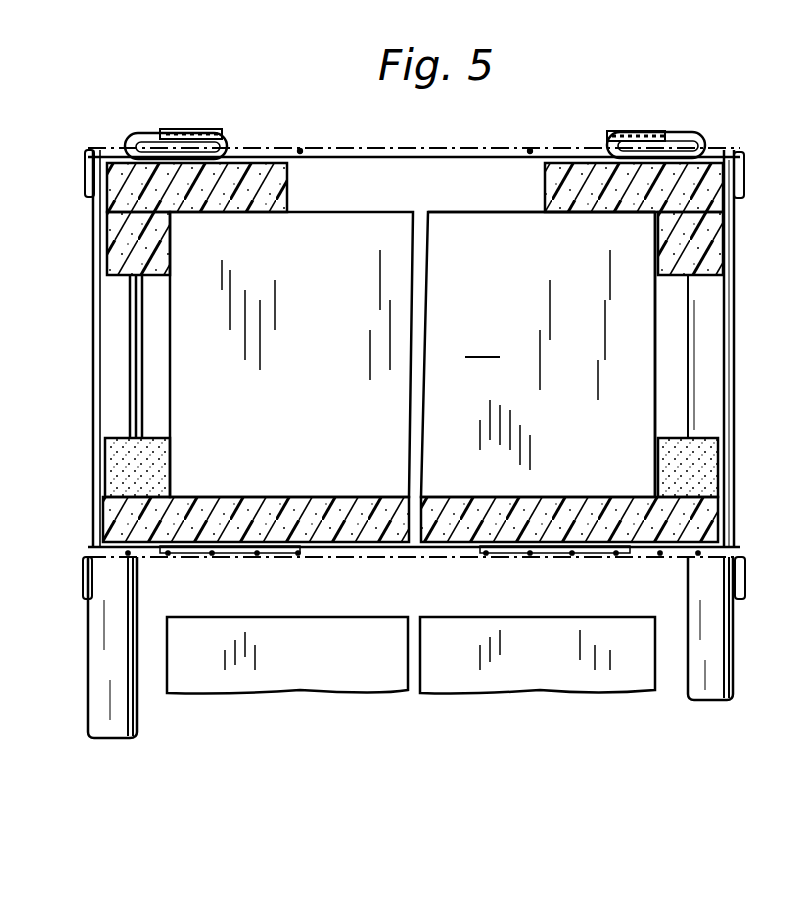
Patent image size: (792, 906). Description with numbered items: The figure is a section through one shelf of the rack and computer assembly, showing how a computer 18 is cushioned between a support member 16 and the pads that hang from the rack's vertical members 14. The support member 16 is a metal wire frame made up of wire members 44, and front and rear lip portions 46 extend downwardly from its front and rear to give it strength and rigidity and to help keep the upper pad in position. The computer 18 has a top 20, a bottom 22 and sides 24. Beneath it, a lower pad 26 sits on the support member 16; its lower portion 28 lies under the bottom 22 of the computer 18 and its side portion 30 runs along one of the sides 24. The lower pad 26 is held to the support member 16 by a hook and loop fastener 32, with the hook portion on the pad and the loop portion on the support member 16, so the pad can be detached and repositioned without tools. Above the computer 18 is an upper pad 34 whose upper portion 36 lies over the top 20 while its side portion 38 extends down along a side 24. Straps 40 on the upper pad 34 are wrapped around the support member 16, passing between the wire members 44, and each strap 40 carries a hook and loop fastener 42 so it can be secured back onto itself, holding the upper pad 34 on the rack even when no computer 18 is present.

The vertical member 14 is at (720, 340).
The support member 16 is at (736, 548).
The computer 18 is at (642, 383).
The top 20 is at (480, 210).
The bottom 22 is at (662, 316).
The side 24 is at (556, 500).
The lower pad 26 is at (708, 452).
The lower portion 28 is at (108, 516).
The side portion 30 is at (108, 452).
The hook and loop fastener 32 is at (240, 560).
The upper pad 34 is at (727, 210).
The upper portion 36 is at (718, 152).
The side portion 38 is at (706, 262).
The strap 40 is at (163, 120).
The hook and loop fastener 42 is at (252, 120).
The wire member 44 is at (302, 150).
The lip portion 46 is at (742, 168).